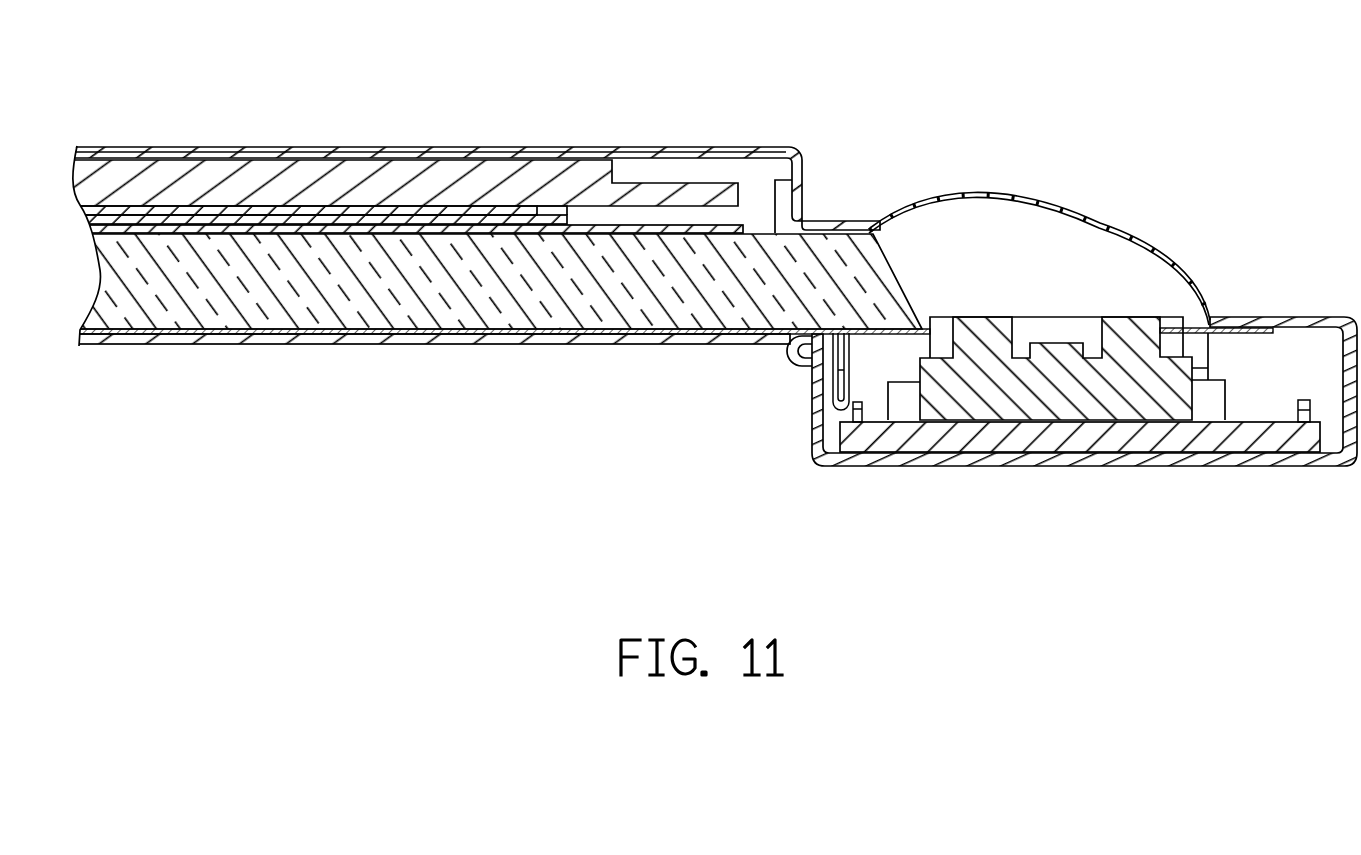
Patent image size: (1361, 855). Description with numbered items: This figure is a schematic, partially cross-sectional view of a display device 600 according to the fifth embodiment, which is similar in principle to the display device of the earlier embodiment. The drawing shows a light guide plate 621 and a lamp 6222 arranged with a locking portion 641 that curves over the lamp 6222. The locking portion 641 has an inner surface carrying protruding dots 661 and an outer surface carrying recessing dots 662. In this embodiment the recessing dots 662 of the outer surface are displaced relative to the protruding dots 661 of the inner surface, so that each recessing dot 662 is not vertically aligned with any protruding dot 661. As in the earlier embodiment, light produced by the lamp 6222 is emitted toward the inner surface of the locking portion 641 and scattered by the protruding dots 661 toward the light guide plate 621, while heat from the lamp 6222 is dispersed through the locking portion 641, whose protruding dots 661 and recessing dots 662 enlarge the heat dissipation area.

The display device 600 is at (594, 58).
The light guide plate 621 is at (328, 306).
The lamp 6222 is at (1027, 393).
The locking portion 641 is at (1157, 255).
The protruding dots 661 is at (960, 208).
The recessing dots 662 is at (1048, 197).